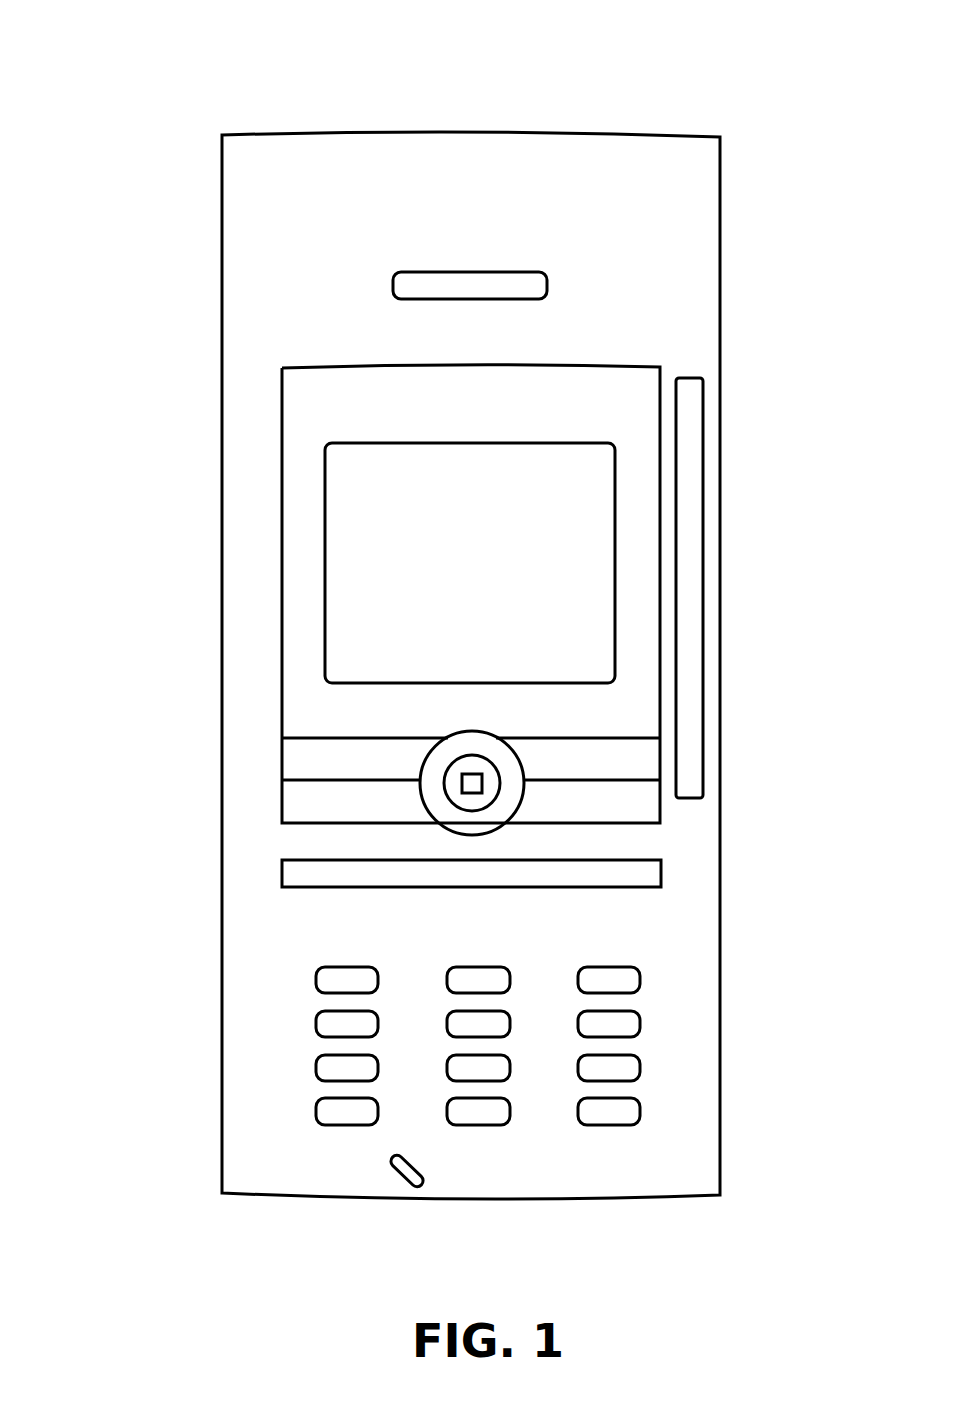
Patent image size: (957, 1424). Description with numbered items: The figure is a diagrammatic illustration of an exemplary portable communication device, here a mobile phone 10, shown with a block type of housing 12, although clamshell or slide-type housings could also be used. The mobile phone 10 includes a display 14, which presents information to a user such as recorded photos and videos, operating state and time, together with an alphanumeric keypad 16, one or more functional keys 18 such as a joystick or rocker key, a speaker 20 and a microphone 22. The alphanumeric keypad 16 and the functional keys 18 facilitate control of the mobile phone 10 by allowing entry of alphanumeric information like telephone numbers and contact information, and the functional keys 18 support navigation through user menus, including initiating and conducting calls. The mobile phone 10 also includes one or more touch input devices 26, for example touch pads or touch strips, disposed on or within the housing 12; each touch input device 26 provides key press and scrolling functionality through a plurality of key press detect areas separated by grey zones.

The mobile phone 10 is at (463, 602).
The housing 12 is at (702, 255).
The display 14 is at (453, 576).
The alphanumeric keypad 16 is at (686, 1020).
The functional keys 18 is at (196, 759).
The speaker 20 is at (452, 272).
The microphone 22 is at (422, 1180).
The touch input device 26 is at (703, 483).